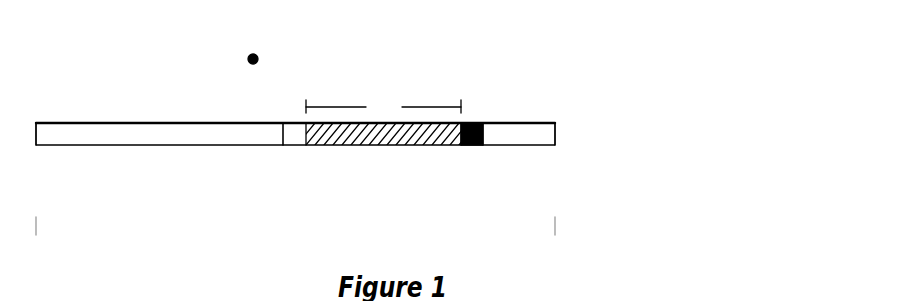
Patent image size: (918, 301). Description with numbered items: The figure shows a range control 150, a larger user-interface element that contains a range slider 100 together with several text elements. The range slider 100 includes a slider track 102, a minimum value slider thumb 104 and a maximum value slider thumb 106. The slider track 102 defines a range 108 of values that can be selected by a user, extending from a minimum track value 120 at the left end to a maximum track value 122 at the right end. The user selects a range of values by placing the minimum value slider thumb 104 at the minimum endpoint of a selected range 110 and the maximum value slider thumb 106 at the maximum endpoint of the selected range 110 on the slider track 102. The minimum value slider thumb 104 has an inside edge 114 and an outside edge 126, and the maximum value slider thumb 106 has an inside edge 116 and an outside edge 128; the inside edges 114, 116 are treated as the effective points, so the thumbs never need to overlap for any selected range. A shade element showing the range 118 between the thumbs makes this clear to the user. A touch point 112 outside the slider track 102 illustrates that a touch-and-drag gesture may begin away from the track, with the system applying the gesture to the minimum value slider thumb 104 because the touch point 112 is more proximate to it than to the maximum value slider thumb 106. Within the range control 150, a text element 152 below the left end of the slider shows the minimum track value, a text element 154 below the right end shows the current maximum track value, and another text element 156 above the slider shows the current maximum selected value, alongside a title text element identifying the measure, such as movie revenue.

The range slider 100 is at (623, 129).
The slider track 102 is at (67, 145).
The minimum value slider thumb 104 is at (292, 138).
The maximum value slider thumb 106 is at (475, 147).
The range of values 108 is at (307, 234).
The selected range 110 is at (398, 112).
The touch point 112 is at (252, 55).
The inside edge of minimum value slider thumb 114 is at (306, 147).
The inside edge of maximum value slider thumb 116 is at (461, 147).
The shade element showing the range 118 is at (367, 147).
The minimum track value 120 is at (36, 123).
The maximum track value 122 is at (555, 123).
The outside edge of minimum value slider thumb 126 is at (283, 135).
The outside edge of maximum value slider thumb 128 is at (484, 130).
The range control 150 is at (646, 90).
The text element showing minimum track value 152 is at (36, 180).
The text element showing current maximum track value 154 is at (356, 72).
The text element showing current maximum selected value 156 is at (490, 39).